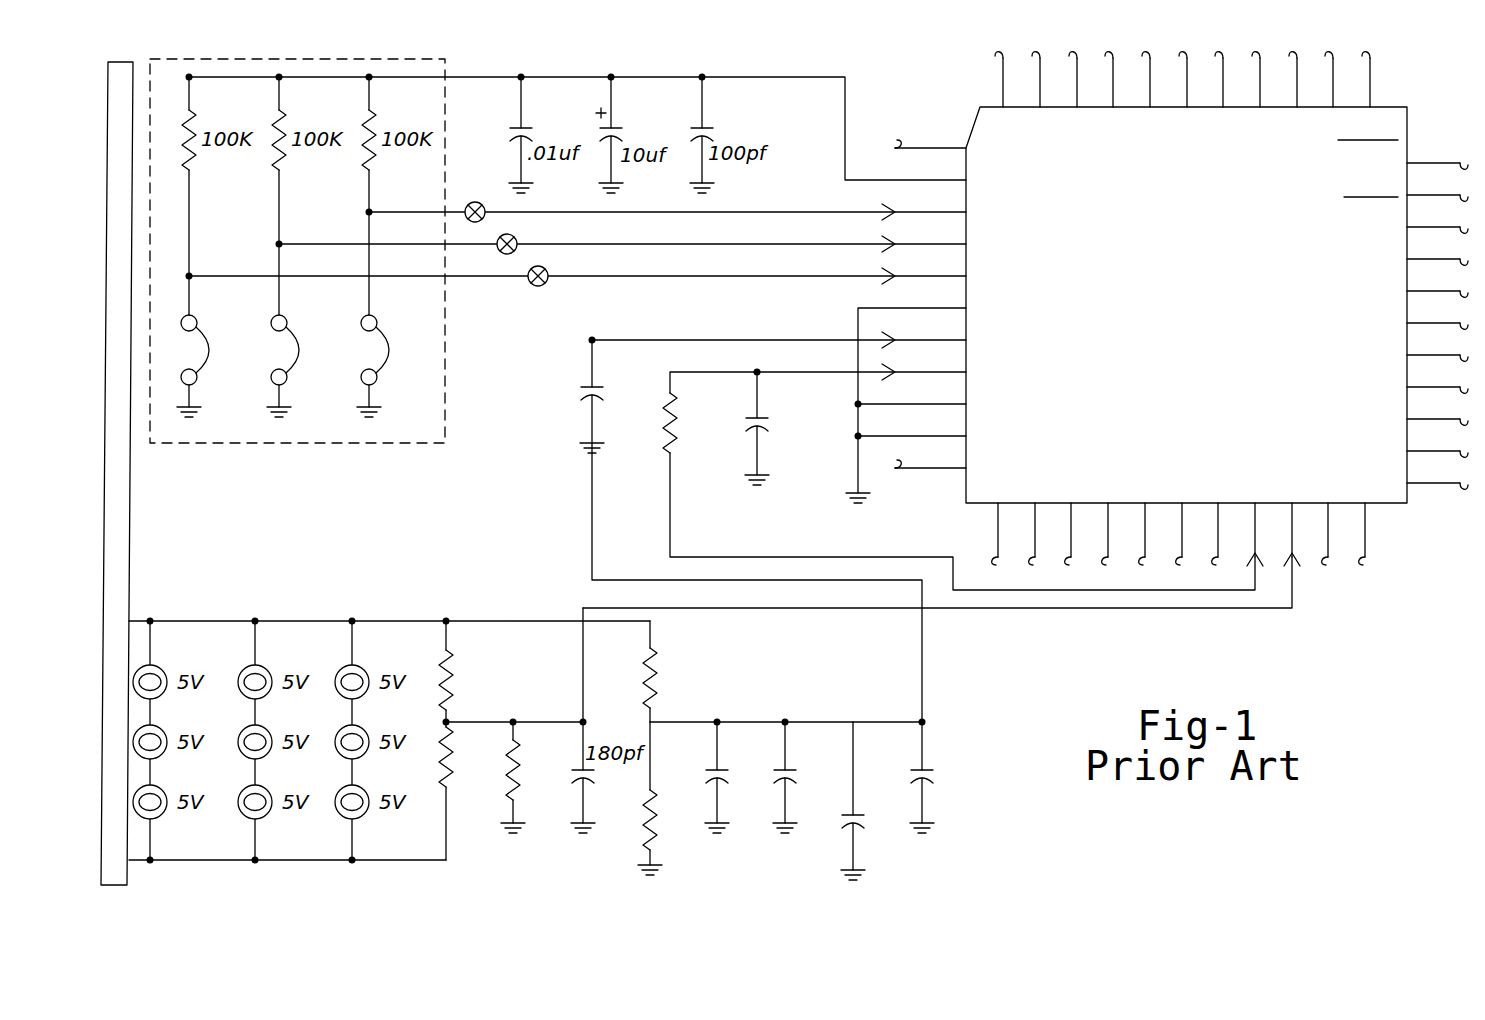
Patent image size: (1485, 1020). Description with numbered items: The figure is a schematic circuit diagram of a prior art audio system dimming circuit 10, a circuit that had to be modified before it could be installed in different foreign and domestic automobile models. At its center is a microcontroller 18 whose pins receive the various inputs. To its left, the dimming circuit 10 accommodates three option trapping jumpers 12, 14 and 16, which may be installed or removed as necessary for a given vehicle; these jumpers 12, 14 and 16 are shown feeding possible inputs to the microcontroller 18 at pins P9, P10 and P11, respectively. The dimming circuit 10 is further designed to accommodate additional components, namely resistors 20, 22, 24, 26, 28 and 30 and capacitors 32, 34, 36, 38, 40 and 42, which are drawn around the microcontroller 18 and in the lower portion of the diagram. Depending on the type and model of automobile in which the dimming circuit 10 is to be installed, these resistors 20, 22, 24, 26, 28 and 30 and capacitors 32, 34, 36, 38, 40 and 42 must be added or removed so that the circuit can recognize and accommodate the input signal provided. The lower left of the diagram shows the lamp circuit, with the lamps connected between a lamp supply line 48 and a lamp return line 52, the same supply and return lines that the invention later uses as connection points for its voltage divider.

The audio system dimming circuit 10 is at (816, 67).
The option trapping jumper 12 is at (196, 380).
The option trapping jumper 14 is at (286, 380).
The option trapping jumper 16 is at (376, 380).
The microcontroller 18 is at (978, 108).
The resistor 20 is at (449, 652).
The resistor 22 is at (449, 762).
The resistor 24 is at (516, 772).
The resistor 26 is at (655, 648).
The resistor 28 is at (655, 797).
The resistor 30 is at (676, 428).
The capacitor 32 is at (720, 774).
The capacitor 34 is at (788, 774).
The capacitor 36 is at (850, 825).
The capacitor 38 is at (919, 770).
The capacitor 40 is at (596, 384).
The capacitor 42 is at (760, 420).
The lamp supply line 48 is at (230, 621).
The lamp return line 52 is at (215, 862).